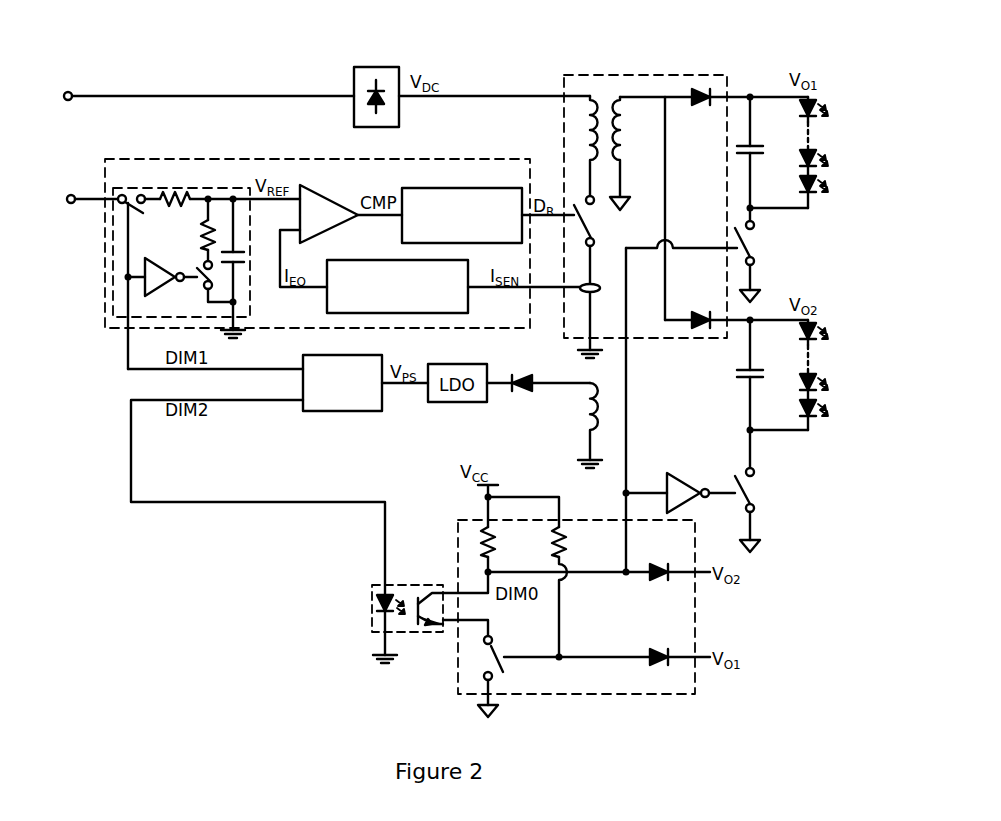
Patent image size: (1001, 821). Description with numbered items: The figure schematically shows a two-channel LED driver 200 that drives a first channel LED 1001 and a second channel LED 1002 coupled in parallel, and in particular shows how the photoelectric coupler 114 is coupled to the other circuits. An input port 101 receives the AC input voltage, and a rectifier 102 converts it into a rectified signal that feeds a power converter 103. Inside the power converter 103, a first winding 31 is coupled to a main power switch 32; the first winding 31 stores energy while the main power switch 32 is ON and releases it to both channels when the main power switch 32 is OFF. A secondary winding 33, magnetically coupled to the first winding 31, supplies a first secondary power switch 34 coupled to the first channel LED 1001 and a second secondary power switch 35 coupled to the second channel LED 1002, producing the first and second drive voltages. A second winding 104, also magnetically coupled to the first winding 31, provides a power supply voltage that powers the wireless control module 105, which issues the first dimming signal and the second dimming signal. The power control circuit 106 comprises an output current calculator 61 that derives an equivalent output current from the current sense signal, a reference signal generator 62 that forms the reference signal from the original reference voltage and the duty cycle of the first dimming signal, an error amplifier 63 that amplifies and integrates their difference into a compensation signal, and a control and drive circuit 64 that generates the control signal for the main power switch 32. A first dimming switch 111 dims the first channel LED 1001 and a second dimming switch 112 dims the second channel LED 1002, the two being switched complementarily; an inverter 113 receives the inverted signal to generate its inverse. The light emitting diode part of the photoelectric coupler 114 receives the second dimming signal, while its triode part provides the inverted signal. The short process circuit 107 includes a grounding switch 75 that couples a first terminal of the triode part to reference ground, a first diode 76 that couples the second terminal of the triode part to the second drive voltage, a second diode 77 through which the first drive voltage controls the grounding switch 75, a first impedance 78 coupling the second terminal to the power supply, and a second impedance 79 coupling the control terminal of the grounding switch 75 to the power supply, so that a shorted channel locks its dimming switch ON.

The input port 101 is at (97, 86).
The rectifier 102 is at (348, 111).
The power converter 103 is at (565, 88).
The second winding 104 is at (585, 408).
The wireless control module (RF/MCU) 105 is at (356, 413).
The power control circuit 106 is at (144, 160).
The short process circuit 107 is at (576, 607).
The first dimming switch 111 is at (757, 240).
The second dimming switch 112 is at (758, 486).
The inverter 113 is at (682, 478).
The photoelectric coupler 114 is at (366, 598).
The two-channel LED driver 200 is at (779, 52).
The first winding 31 is at (588, 140).
The main power switch 32 is at (595, 208).
The secondary winding 33 is at (624, 145).
The first secondary power switch 34 is at (700, 102).
The second secondary power switch 35 is at (702, 315).
The output current calculator 61 is at (470, 297).
The reference signal generator 62 is at (252, 302).
The error amplifier 63 is at (328, 197).
The control and drive circuit 64 is at (470, 188).
The grounding switch 75 is at (501, 668).
The first diode 76 is at (679, 588).
The second diode 77 is at (634, 672).
The first impedance 78 is at (499, 542).
The second impedance 79 is at (570, 542).
The first channel LED 1001 is at (804, 146).
The second channel LED 1002 is at (804, 368).